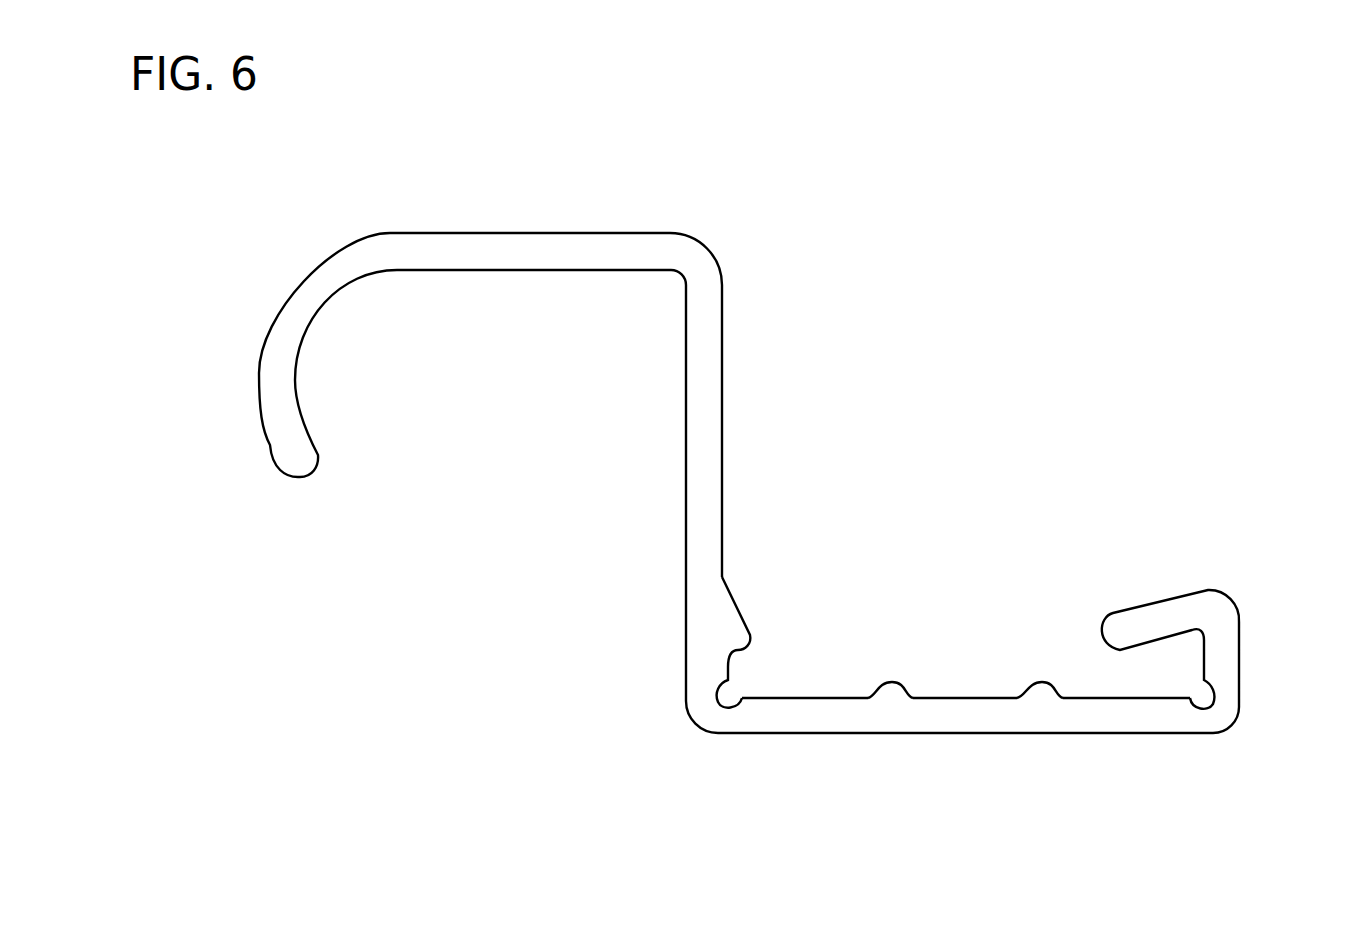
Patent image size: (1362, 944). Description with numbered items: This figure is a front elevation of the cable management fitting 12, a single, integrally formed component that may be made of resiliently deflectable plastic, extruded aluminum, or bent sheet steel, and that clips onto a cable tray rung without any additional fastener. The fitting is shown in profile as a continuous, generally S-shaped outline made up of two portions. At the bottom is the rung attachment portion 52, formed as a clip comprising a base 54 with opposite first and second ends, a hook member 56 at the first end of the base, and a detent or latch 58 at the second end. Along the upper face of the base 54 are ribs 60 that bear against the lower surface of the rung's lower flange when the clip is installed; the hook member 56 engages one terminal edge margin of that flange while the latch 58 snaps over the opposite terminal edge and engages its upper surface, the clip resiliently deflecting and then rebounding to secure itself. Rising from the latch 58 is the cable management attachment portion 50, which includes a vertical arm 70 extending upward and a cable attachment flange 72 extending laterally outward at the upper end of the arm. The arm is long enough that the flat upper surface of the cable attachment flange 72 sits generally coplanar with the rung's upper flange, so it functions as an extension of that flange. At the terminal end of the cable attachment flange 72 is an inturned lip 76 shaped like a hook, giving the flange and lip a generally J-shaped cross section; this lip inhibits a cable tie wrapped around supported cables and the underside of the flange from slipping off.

The cable management fitting 12 is at (1087, 183).
The cable management attachment portion 50 is at (722, 260).
The rung attachment portion 52 is at (862, 738).
The base 54 is at (1086, 718).
The hook member 56 is at (1215, 612).
The latch 58 is at (738, 633).
The ribs 60 is at (896, 683).
The vertical arm 70 is at (708, 430).
The cable attachment flange 72 is at (519, 245).
The inturned lip 76 is at (288, 442).